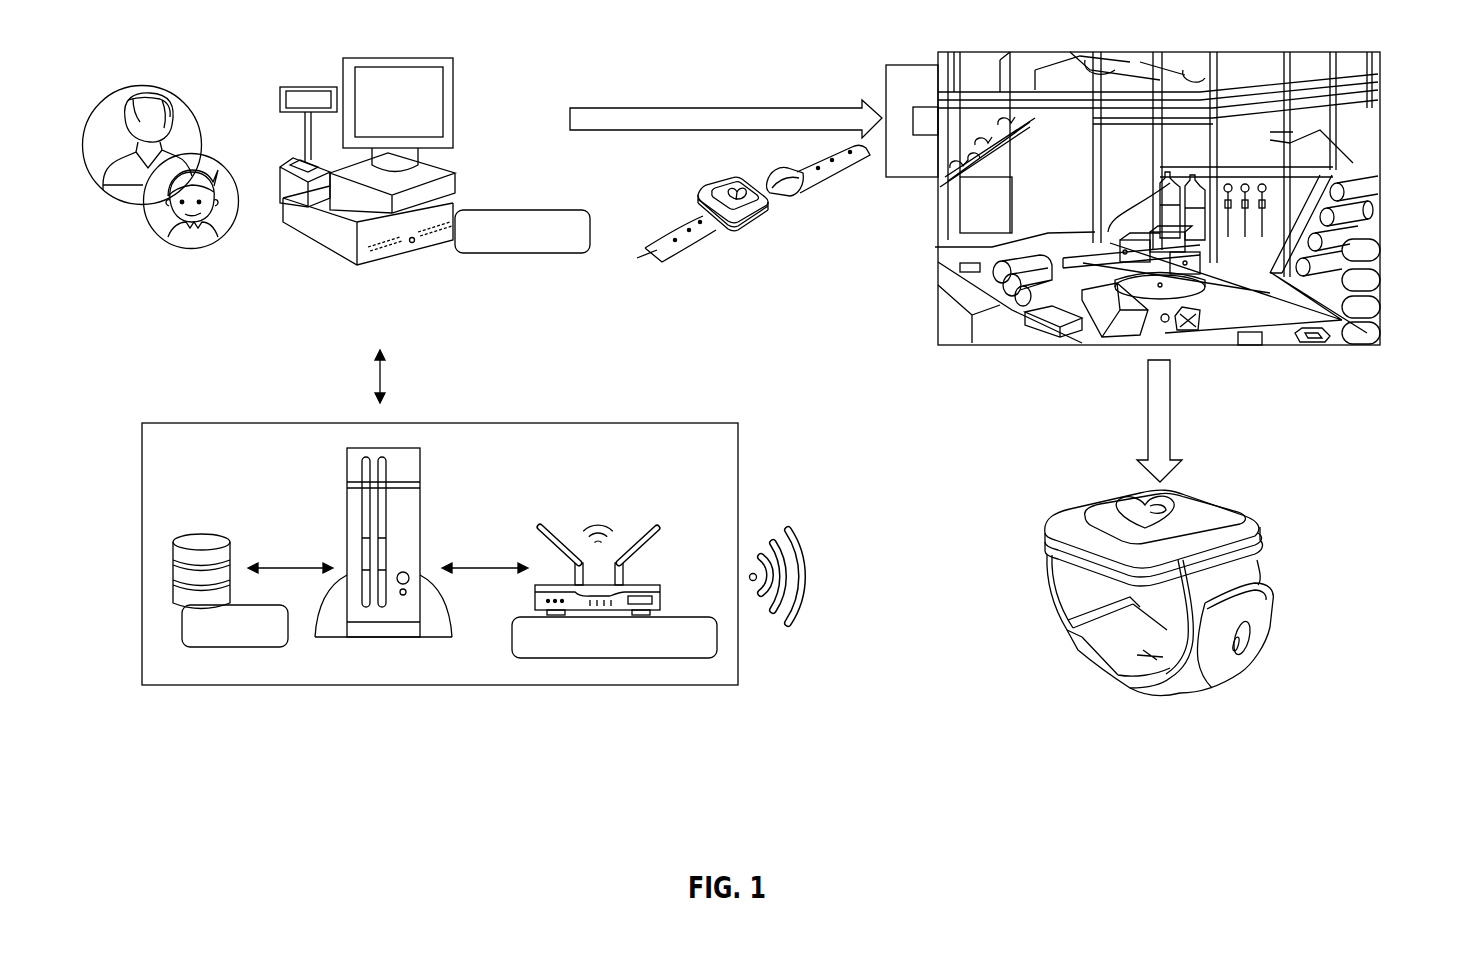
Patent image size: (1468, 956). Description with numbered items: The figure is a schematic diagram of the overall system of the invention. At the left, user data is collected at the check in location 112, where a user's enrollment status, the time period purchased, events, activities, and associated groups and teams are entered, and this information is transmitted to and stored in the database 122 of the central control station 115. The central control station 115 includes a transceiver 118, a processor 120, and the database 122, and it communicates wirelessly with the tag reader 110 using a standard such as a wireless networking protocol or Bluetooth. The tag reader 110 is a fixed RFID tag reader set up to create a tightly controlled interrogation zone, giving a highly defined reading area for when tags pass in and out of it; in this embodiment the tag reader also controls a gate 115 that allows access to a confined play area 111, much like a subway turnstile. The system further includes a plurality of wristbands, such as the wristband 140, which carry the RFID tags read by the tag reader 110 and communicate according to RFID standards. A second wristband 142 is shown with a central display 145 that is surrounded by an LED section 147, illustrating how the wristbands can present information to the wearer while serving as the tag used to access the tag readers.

The tag reader 110 is at (910, 78).
The confined play area 111 is at (1380, 132).
The check in location 112 is at (463, 75).
The central control station 115 is at (534, 443).
The transceiver 118 is at (600, 650).
The processor 120 is at (398, 622).
The database 122 is at (235, 640).
The wristband 140 is at (683, 238).
The wristband 142 is at (1188, 575).
The central display 145 is at (1190, 503).
The LED section 147 is at (1040, 537).